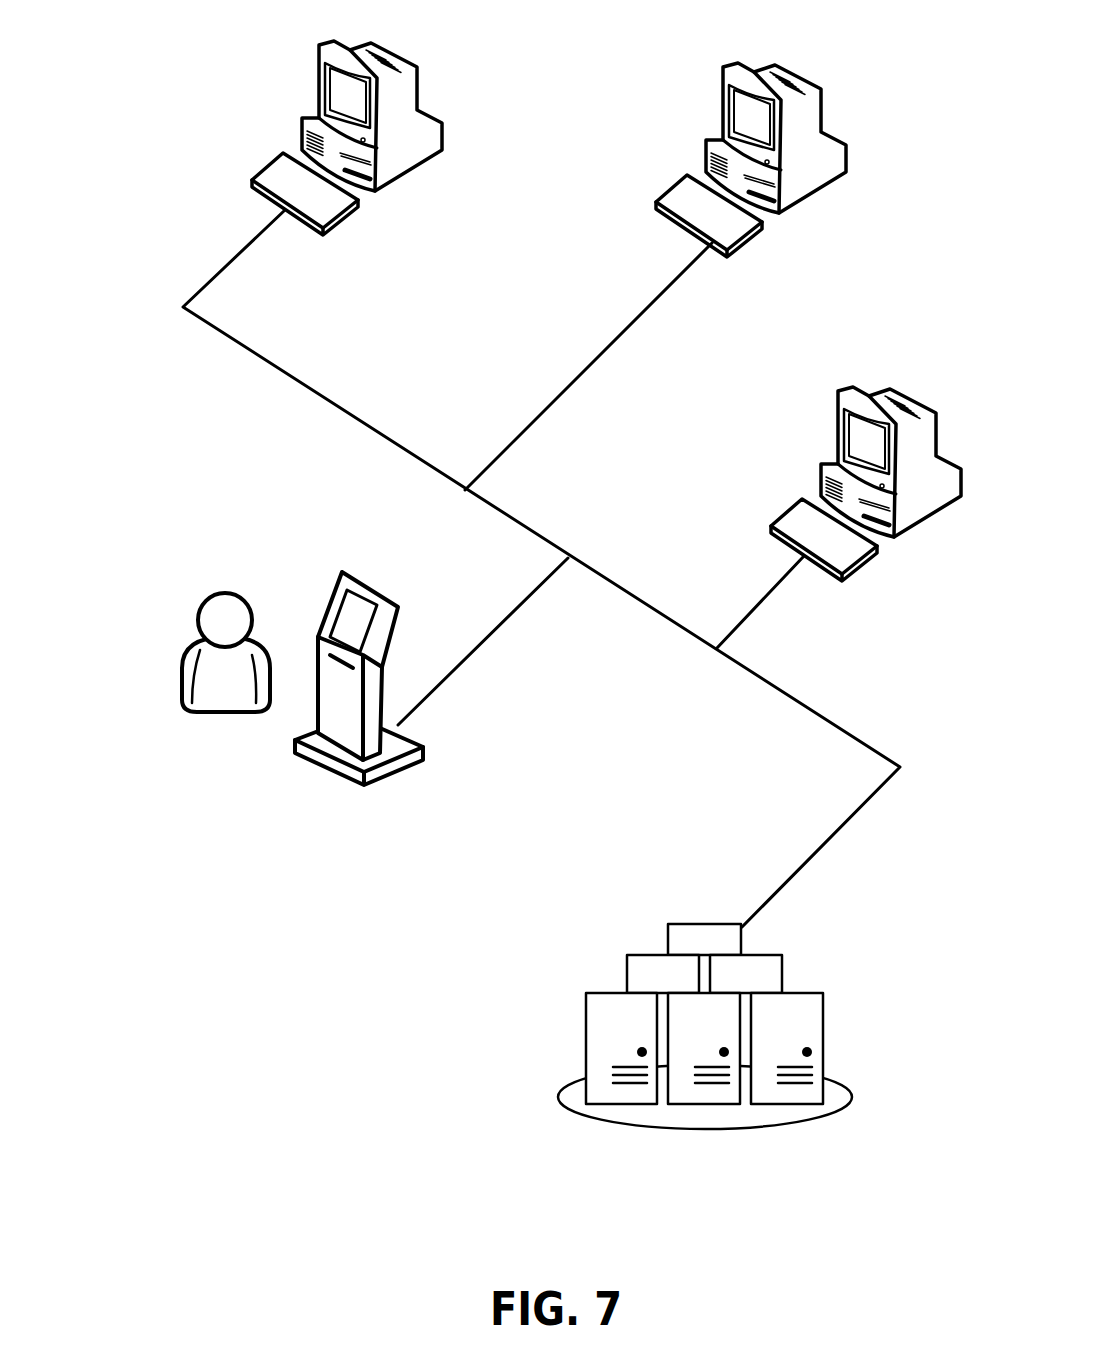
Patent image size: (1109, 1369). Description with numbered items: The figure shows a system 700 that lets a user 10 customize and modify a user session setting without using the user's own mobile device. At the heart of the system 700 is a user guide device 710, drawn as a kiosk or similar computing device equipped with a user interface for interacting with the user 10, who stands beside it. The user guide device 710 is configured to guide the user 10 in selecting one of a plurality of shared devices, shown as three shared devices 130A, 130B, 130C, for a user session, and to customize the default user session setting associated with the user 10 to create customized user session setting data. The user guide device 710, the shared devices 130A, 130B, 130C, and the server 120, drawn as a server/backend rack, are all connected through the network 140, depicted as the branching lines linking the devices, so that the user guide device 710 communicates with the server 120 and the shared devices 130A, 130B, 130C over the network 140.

The system 700 is at (238, 76).
The shared device 130A is at (415, 172).
The shared device 130B is at (815, 193).
The shared device 130C is at (838, 428).
The user guide device 710 is at (363, 583).
The user 10 is at (186, 650).
The network 140 is at (813, 853).
The server 120 is at (583, 998).